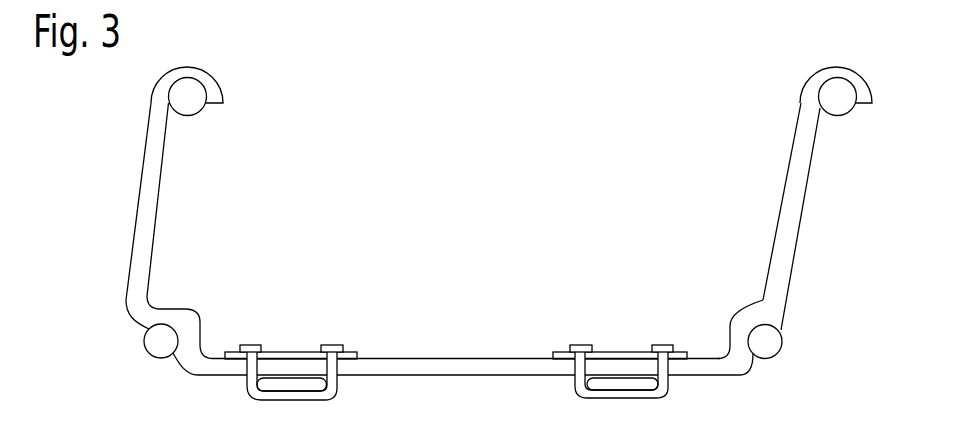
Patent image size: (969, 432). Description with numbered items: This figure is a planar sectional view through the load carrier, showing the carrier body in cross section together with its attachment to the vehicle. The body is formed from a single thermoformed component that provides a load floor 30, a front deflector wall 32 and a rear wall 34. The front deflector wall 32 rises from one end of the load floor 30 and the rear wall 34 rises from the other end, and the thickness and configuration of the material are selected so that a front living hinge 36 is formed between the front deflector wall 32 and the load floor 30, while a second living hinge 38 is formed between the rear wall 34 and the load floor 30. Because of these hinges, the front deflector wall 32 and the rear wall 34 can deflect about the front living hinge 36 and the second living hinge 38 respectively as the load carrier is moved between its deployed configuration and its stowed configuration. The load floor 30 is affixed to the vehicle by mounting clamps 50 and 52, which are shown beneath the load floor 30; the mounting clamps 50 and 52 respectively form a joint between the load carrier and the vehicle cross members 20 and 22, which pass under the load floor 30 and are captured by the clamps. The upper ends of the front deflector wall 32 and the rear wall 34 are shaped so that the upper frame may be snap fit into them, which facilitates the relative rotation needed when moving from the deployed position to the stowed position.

The vehicle cross member 20 is at (317, 388).
The vehicle cross member 22 is at (642, 385).
The load floor 30 is at (445, 358).
The front deflector wall 32 is at (157, 199).
The rear wall 34 is at (787, 168).
The front living hinge 36 is at (153, 299).
The second living hinge 38 is at (756, 298).
The mounting clamp 50 is at (248, 345).
The mounting clamp 52 is at (580, 345).